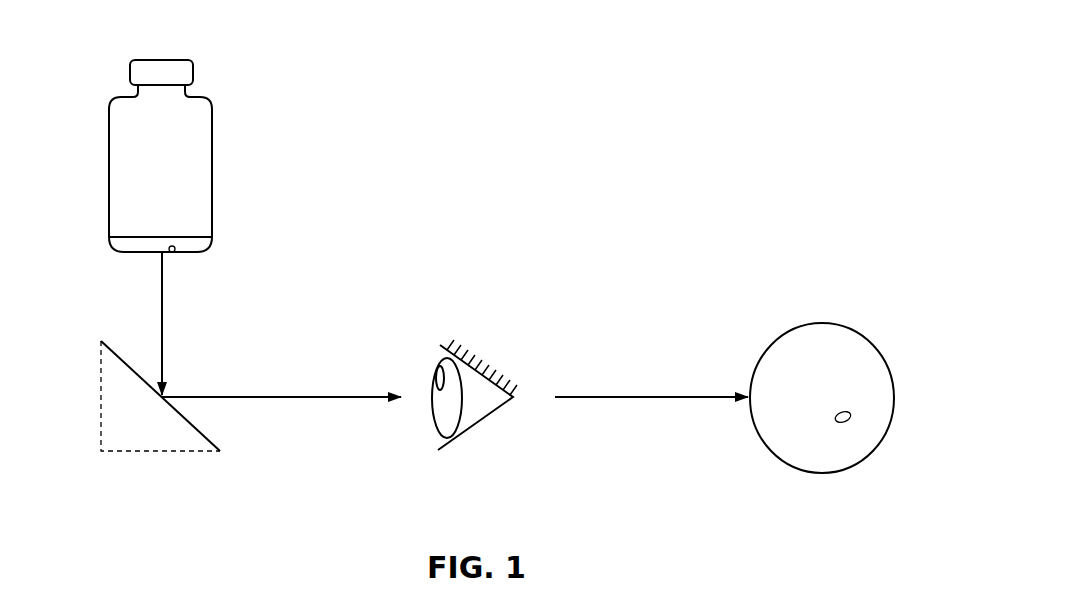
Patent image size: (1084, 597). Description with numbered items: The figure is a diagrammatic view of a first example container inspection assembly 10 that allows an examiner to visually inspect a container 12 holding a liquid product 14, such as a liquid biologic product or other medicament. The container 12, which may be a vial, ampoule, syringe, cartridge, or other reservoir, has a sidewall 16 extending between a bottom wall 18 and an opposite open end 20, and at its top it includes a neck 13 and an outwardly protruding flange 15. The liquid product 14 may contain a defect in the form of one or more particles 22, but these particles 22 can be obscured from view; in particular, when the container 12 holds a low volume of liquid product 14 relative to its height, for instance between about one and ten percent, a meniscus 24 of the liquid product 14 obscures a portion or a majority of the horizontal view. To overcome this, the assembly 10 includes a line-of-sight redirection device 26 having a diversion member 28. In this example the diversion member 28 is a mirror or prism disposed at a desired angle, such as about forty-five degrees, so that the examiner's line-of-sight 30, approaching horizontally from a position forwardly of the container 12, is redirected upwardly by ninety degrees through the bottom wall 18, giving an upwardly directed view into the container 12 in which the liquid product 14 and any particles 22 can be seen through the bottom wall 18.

The container inspection assembly 10 is at (825, 50).
The container 12 is at (214, 127).
The neck 13 is at (137, 90).
The liquid product 14 is at (118, 248).
The flange 15 is at (194, 73).
The sidewall 16 is at (110, 155).
The bottom wall 18 is at (145, 255).
The open end 20 is at (173, 75).
The particles 22 is at (173, 253).
The meniscus 24 is at (187, 235).
The line-of-sight redirection device 26 is at (148, 476).
The diversion member 28 is at (195, 433).
The line-of-sight 30 is at (290, 393).